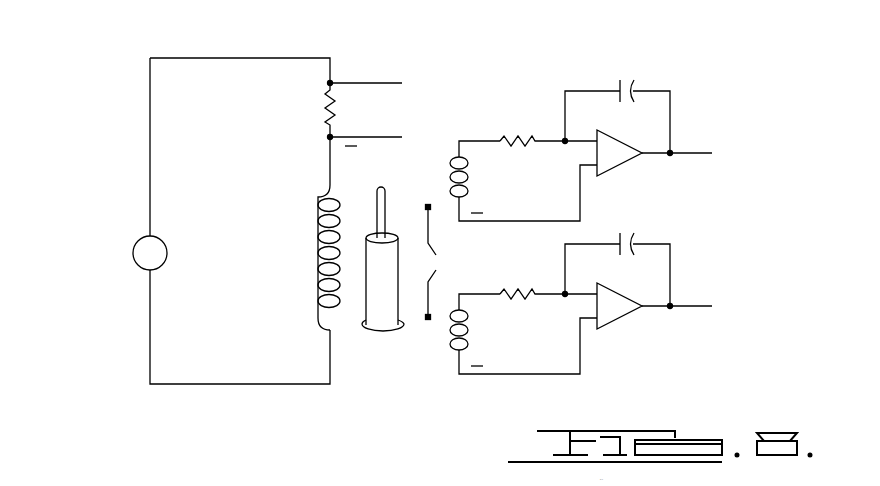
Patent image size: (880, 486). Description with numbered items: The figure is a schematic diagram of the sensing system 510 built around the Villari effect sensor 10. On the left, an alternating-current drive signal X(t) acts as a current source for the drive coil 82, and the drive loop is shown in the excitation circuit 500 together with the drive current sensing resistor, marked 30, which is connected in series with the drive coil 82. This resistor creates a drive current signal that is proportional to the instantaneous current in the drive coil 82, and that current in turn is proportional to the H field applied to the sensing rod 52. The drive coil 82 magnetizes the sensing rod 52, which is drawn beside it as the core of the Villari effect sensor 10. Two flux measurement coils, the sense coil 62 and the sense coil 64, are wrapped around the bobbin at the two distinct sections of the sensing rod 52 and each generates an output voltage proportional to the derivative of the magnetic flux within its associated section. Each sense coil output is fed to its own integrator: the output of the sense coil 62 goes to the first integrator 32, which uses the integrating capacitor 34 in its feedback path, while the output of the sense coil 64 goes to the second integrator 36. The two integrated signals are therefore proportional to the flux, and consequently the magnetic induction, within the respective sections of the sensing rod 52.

The excitation circuit 500 is at (128, 89).
The sensing system 510 is at (120, 157).
The sense resistor 30 is at (289, 48).
The drive coil 82 is at (313, 262).
The sensing rod 52 is at (378, 340).
The Villari effect sensor 10 is at (393, 392).
The sense coil 62 is at (448, 162).
The first integrator 32 is at (583, 72).
The integrating capacitor 34 is at (650, 78).
The sense coil 64 is at (447, 356).
The second integrator 36 is at (635, 328).